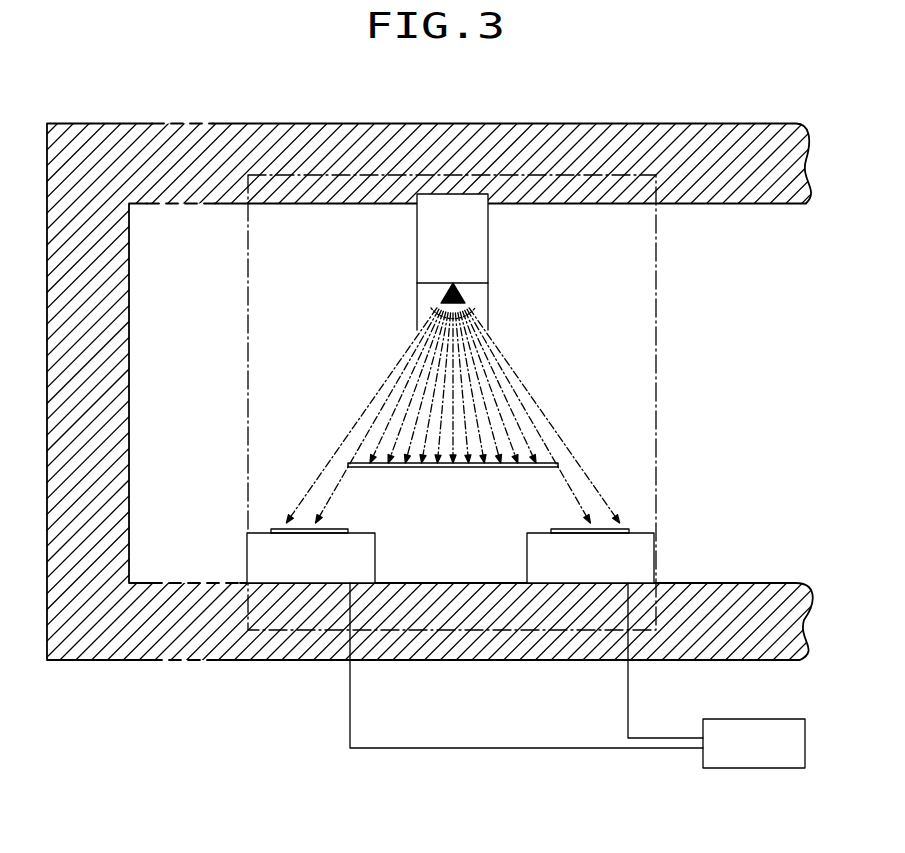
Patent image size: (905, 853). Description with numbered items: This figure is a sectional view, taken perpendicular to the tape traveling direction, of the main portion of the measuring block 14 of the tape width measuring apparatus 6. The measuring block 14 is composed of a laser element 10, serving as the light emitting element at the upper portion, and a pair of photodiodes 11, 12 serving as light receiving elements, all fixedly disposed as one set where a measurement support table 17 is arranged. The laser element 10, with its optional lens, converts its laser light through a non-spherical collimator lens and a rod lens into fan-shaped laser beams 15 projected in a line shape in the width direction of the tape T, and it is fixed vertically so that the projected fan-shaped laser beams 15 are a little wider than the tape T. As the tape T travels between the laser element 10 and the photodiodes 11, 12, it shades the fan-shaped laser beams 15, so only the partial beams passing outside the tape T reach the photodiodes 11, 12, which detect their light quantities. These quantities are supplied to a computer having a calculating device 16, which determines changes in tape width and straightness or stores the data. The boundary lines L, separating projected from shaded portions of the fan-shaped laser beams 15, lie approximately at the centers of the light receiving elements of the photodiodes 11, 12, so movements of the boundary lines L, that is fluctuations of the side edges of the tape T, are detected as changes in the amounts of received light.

The tape width measuring apparatus 6 is at (452, 365).
The laser element 10 is at (456, 200).
The photodiode 11 is at (650, 573).
The photodiode 12 is at (258, 560).
The measuring block 14 is at (292, 174).
The fan-shaped laser beams 15 is at (512, 386).
The calculating device 16 is at (753, 729).
The measurement support table 17 is at (720, 123).
The boundary line L is at (307, 534).
The tape T is at (445, 470).